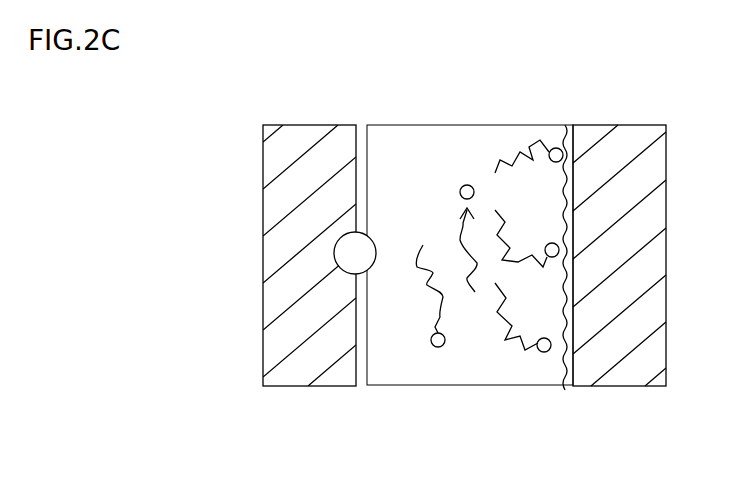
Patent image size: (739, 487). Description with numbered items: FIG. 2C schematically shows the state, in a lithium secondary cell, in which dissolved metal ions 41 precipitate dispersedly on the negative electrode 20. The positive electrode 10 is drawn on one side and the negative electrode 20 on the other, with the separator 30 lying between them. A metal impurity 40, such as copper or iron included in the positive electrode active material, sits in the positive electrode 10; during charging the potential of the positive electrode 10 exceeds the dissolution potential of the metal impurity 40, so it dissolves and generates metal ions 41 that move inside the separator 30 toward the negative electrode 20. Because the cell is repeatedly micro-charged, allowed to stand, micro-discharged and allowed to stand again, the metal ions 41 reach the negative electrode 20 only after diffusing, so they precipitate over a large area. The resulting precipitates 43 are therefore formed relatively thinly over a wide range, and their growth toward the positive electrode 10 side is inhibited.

The positive electrode 10 is at (307, 125).
The negative electrode 20 is at (617, 125).
The separator 30 is at (460, 125).
The metal impurity 40 is at (334, 247).
The metal ions 41 is at (467, 185).
The precipitates 43 is at (566, 387).